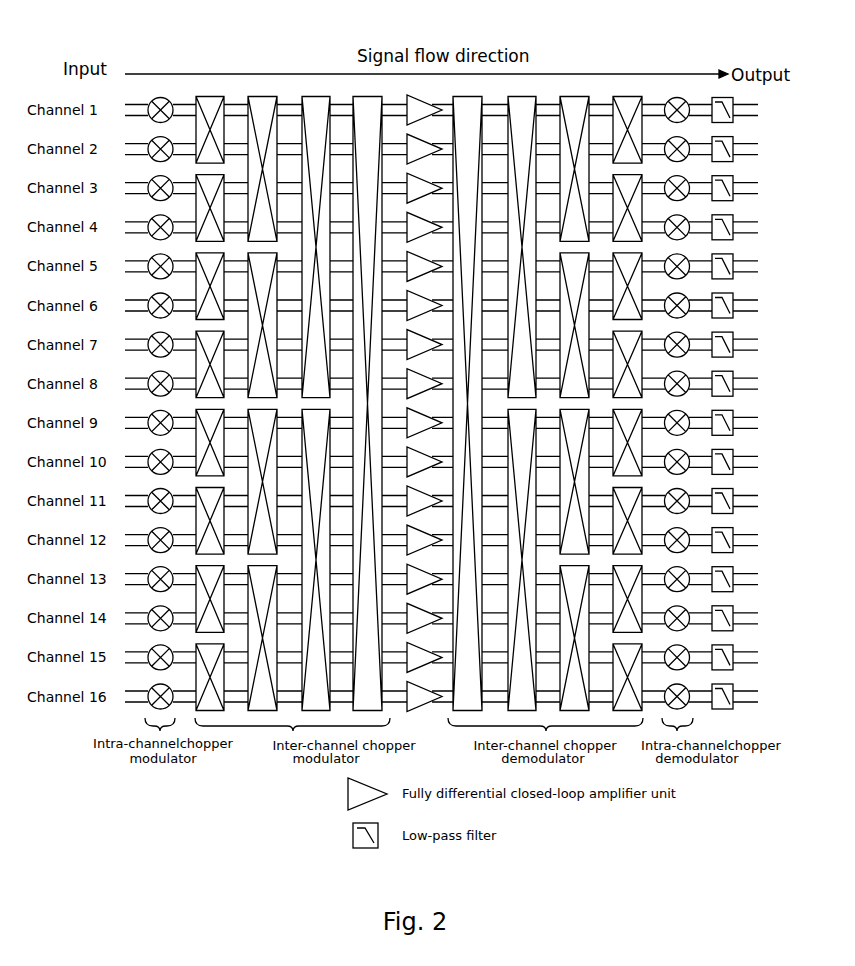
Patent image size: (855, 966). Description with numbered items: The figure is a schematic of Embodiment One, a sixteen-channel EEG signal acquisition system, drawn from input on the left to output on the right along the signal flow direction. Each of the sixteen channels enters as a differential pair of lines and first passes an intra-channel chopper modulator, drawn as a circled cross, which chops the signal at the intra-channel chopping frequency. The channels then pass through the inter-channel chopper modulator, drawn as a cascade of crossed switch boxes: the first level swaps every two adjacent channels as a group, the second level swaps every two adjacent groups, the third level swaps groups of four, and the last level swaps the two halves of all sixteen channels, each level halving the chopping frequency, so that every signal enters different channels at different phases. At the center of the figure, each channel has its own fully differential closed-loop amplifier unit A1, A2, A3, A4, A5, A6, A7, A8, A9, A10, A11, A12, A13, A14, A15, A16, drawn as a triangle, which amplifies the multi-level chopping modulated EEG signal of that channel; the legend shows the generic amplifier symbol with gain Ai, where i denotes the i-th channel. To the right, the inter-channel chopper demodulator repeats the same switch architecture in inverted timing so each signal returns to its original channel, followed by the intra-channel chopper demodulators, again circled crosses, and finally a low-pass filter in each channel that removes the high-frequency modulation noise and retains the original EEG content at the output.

The fully differential closed-loop amplifier unit A1 is at (424, 106).
The fully differential closed-loop amplifier unit A2 is at (424, 145).
The fully differential closed-loop amplifier unit A3 is at (424, 184).
The fully differential closed-loop amplifier unit A4 is at (424, 223).
The fully differential closed-loop amplifier unit A5 is at (424, 262).
The fully differential closed-loop amplifier unit A6 is at (424, 302).
The fully differential closed-loop amplifier unit A7 is at (424, 341).
The fully differential closed-loop amplifier unit A8 is at (424, 380).
The fully differential closed-loop amplifier unit A9 is at (424, 419).
The fully differential closed-loop amplifier unit A10 is at (426, 458).
The fully differential closed-loop amplifier unit A11 is at (426, 497).
The fully differential closed-loop amplifier unit A12 is at (426, 536).
The fully differential closed-loop amplifier unit A13 is at (426, 575).
The fully differential closed-loop amplifier unit A14 is at (426, 614).
The fully differential closed-loop amplifier unit A15 is at (426, 653).
The fully differential closed-loop amplifier unit A16 is at (426, 693).
The amplification gain of the i-th channel Ai is at (367, 792).